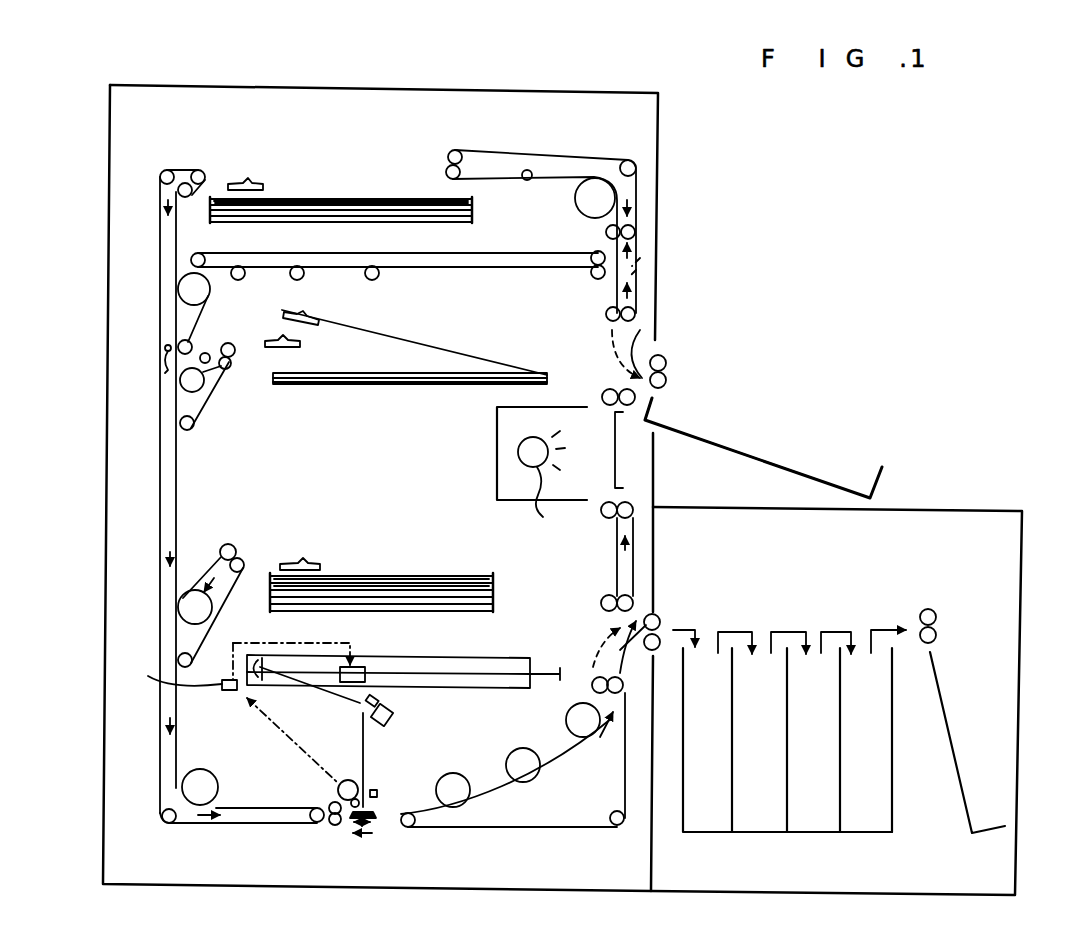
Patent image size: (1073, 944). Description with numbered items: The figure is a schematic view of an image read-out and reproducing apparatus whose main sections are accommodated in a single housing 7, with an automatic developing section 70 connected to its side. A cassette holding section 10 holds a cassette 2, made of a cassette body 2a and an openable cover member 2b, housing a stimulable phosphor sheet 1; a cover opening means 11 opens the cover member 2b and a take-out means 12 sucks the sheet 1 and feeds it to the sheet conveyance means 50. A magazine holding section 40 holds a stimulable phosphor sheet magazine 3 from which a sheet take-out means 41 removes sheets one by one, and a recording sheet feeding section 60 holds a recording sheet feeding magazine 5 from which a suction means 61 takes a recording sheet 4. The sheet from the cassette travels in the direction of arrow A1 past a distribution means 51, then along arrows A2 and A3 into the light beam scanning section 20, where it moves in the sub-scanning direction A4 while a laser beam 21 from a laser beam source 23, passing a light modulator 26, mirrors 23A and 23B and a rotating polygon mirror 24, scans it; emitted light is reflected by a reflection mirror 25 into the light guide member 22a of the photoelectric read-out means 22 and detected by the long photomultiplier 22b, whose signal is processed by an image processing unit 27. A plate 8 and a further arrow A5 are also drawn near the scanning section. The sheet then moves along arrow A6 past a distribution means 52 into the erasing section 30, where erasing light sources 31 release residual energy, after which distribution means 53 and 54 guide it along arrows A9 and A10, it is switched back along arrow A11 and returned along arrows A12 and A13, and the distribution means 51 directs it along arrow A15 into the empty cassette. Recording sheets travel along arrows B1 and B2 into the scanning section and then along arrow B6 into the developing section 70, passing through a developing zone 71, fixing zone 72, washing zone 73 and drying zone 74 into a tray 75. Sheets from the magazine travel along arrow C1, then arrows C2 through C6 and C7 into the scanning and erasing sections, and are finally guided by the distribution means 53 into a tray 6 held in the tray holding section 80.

The stimulable phosphor sheet 1 is at (313, 199).
The cassette 2 is at (400, 398).
The cassette body 2a is at (437, 398).
The cover member 2b is at (447, 350).
The stimulable phosphor sheet magazine 3 is at (476, 208).
The recording sheet 4 is at (347, 579).
The recording sheet feeding magazine 5 is at (495, 598).
The tray 6 is at (882, 482).
The housing 7 is at (473, 91).
The sheet detecting plate 8 is at (372, 817).
The cassette holding section 10 is at (431, 327).
The cover opening means 11 is at (320, 313).
The stimulable phosphor sheet take-out means 12 is at (302, 344).
The light beam scanning section 20 is at (423, 763).
The laser beam 21 is at (365, 740).
The photoelectric read-out means 22 is at (307, 777).
The light guide member 22a is at (338, 793).
The long photomultiplier 22b is at (344, 785).
The laser beam source 23 is at (448, 657).
The mirror 23A is at (562, 670).
The mirror 23B is at (258, 655).
The rotating polygon mirror 24 is at (392, 698).
The reflection mirror 25 is at (377, 797).
The light modulator 26 is at (367, 667).
The image processing unit 27 is at (177, 675).
The erasing section 30 is at (480, 468).
The erasing light source 31 is at (536, 482).
The magazine holding section 40 is at (363, 181).
The sheet take-out means 41 is at (260, 178).
The sheet conveyance means 50 is at (494, 150).
The distribution means 51 is at (165, 368).
The distribution means 52 is at (658, 620).
The distribution means 53 is at (663, 354).
The distribution means 54 is at (640, 258).
The recording sheet feeding section 60 is at (417, 566).
The suction means 61 is at (317, 555).
The automatic developing section 70 is at (992, 500).
The developing zone 71 is at (710, 833).
The fixing zone 72 is at (763, 833).
The washing zone 73 is at (823, 833).
The drying zone 74 is at (875, 833).
The tray 75 is at (938, 758).
The tray holding section 80 is at (826, 388).
The arrow A1 is at (204, 370).
The arrow A2 is at (190, 541).
The arrow A3 is at (210, 824).
The arrow A4 is at (371, 831).
The sheet position A5 is at (362, 836).
The arrow A6 is at (592, 750).
The arrow A9 is at (634, 293).
The arrow A10 is at (537, 160).
The arrow A11 is at (634, 206).
The arrow A12 is at (465, 272).
The arrow A13 is at (253, 262).
The arrow A15 is at (250, 352).
The arrow B1 is at (243, 645).
The arrow B2 is at (160, 717).
The arrow B6 is at (595, 650).
The arrow C1 is at (162, 198).
The arrow C2 is at (168, 326).
The arrow C6 is at (617, 553).
The arrow C7 is at (622, 428).